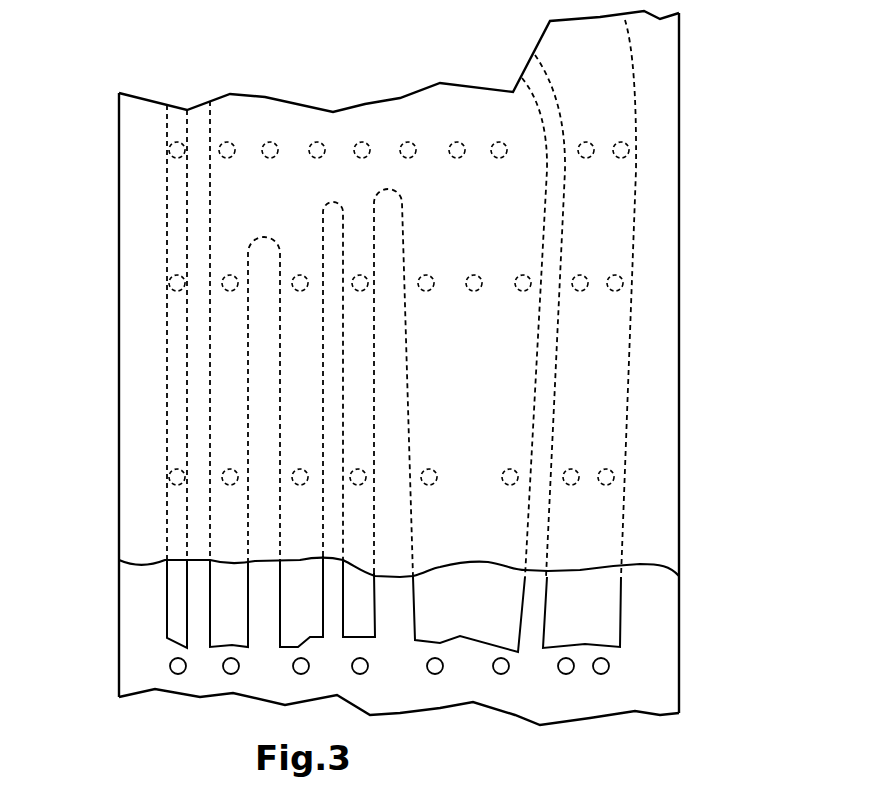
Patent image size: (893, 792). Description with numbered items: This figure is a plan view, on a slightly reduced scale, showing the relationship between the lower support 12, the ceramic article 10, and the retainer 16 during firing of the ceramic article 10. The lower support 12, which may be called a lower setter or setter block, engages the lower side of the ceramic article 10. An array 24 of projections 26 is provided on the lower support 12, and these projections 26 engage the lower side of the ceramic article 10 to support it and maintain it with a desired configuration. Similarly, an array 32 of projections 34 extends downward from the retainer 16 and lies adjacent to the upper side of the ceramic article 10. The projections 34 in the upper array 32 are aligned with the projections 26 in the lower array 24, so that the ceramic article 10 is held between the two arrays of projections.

The ceramic article 10 is at (640, 600).
The lower support 12 is at (110, 630).
The retainer 16 is at (148, 210).
The array of projections 24 is at (660, 655).
The projections 26 is at (229, 672).
The array of projections 32 is at (650, 483).
The projections 34 is at (270, 143).